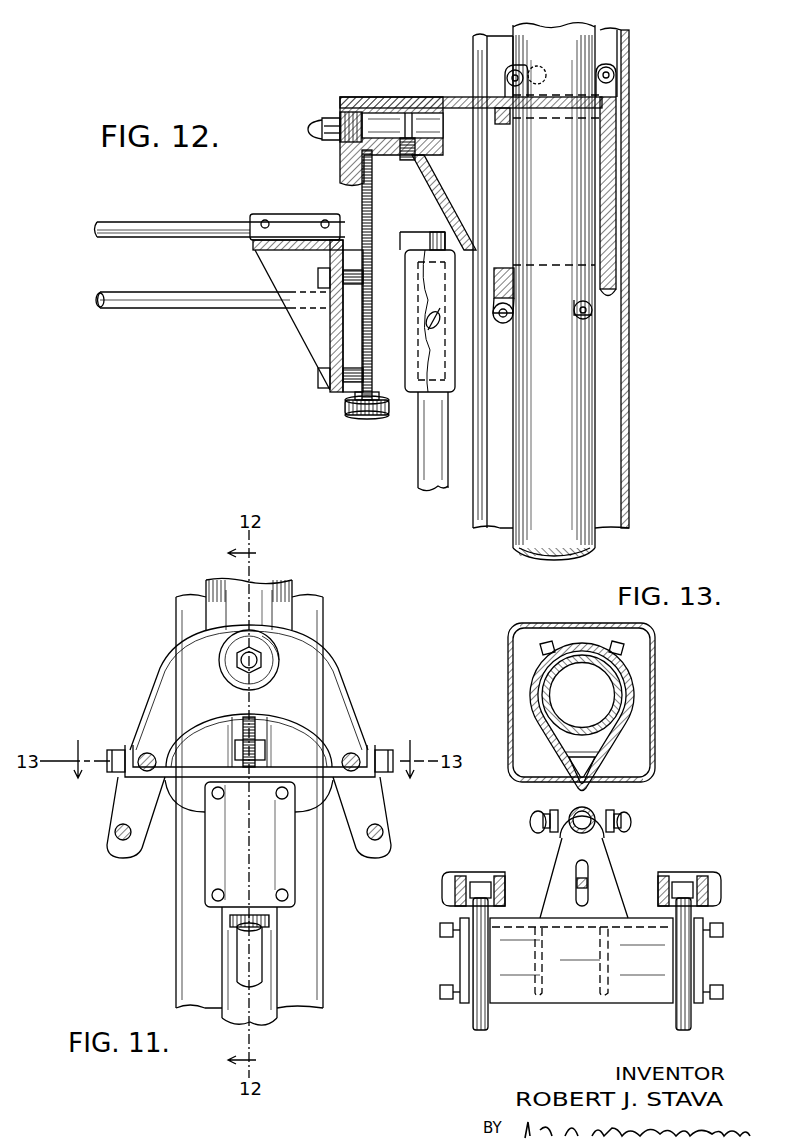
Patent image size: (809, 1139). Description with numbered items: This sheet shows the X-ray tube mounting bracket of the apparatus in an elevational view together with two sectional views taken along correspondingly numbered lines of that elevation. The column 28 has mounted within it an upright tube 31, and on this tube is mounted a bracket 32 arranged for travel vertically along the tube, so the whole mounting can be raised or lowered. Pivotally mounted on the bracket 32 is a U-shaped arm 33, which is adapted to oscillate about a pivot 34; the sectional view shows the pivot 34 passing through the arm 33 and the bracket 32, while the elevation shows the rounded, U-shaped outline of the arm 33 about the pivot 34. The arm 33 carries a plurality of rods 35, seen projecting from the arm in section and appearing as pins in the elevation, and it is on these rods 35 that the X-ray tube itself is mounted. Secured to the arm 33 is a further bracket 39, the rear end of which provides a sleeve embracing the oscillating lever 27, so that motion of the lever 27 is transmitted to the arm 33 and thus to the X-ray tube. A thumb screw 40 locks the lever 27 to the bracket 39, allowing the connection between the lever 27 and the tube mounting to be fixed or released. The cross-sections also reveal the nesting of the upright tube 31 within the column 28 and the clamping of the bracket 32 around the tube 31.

In FIG. 12, the oscillating lever 27 is at (428, 470).
In FIG. 11, the oscillating lever 27 is at (248, 957).
In FIG. 13, the oscillating lever 27 is at (596, 812).
In FIG. 12, the column 28 is at (630, 347).
In FIG. 11, the column 28 is at (316, 605).
In FIG. 13, the column 28 is at (654, 702).
In FIG. 12, the upright tube 31 is at (524, 434).
In FIG. 11, the upright tube 31 is at (270, 588).
In FIG. 13, the upright tube 31 is at (618, 678).
In FIG. 12, the bracket 32 is at (612, 175).
In FIG. 13, the bracket 32 is at (625, 745).
In FIG. 12, the U-shaped arm 33 is at (352, 193).
In FIG. 11, the U-shaped arm 33 is at (343, 712).
In FIG. 13, the U-shaped arm 33 is at (462, 876).
In FIG. 12, the pivot 34 is at (348, 124).
In FIG. 11, the pivot 34 is at (256, 664).
In FIG. 12, the rods 35 is at (172, 236).
In FIG. 11, the rods 35 is at (150, 758).
In FIG. 13, the rods 35 is at (475, 1012).
In FIG. 12, the bracket 39 is at (280, 262).
In FIG. 11, the bracket 39 is at (249, 812).
In FIG. 13, the bracket 39 is at (562, 856).
In FIG. 12, the thumb screw 40 is at (430, 328).
In FIG. 13, the thumb screw 40 is at (632, 822).